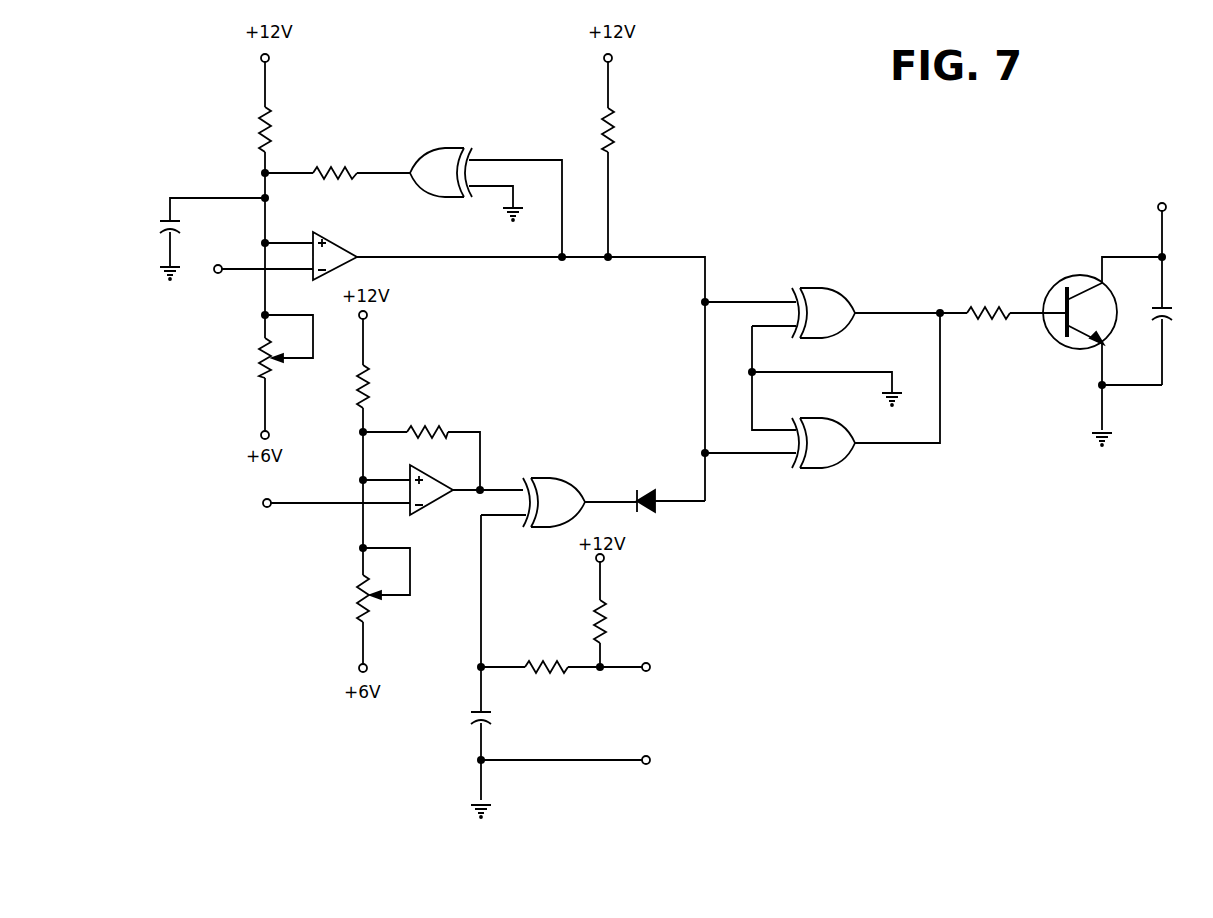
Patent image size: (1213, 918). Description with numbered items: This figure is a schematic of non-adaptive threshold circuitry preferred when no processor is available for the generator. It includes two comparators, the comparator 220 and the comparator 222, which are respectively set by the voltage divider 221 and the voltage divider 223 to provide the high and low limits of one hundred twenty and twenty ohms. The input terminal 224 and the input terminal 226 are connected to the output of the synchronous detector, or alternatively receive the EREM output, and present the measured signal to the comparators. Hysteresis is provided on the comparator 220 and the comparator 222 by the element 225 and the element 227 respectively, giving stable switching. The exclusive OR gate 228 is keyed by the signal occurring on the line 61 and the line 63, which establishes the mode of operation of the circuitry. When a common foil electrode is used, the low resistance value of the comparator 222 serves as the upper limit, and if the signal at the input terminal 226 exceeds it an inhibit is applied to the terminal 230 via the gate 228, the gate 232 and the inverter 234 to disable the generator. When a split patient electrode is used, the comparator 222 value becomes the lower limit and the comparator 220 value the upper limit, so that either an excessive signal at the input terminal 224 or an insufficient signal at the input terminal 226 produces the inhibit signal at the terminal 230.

The voltage divider 221 is at (228, 168).
The comparator 220 is at (340, 253).
The hysteresis element 225 is at (457, 146).
The input terminal 224 is at (219, 274).
The voltage divider 223 is at (348, 458).
The input terminal 226 is at (260, 504).
The hysteresis element 227 is at (444, 410).
The comparator 222 is at (432, 500).
The exclusive OR gate 228 is at (562, 497).
The gate 232 is at (836, 256).
The inverter 234 is at (1060, 293).
The terminal 230 is at (1158, 208).
The line 61 is at (624, 664).
The line 63 is at (585, 760).